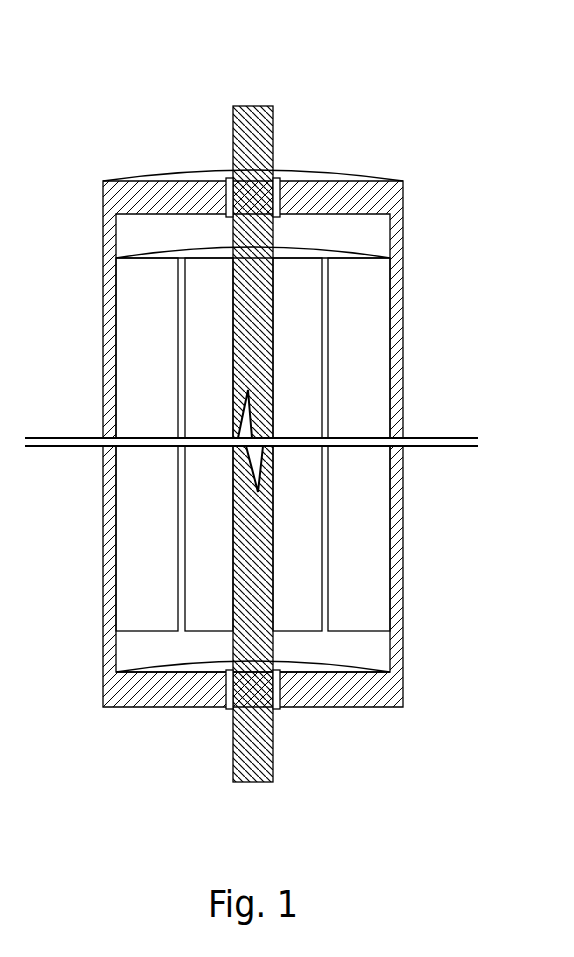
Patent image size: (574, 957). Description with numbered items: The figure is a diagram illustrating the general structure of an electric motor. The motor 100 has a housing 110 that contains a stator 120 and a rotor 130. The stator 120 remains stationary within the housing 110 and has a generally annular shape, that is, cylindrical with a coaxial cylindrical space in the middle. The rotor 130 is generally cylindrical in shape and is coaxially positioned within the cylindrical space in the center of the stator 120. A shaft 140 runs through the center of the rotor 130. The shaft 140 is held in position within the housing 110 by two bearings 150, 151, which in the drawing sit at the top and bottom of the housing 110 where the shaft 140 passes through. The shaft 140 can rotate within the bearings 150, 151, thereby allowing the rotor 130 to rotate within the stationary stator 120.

The motor 100 is at (440, 107).
The housing 110 is at (403, 238).
The stator 120 is at (168, 375).
The rotor 130 is at (228, 375).
The shaft 140 is at (273, 121).
The bearing 150 is at (279, 175).
The bearing 151 is at (280, 709).